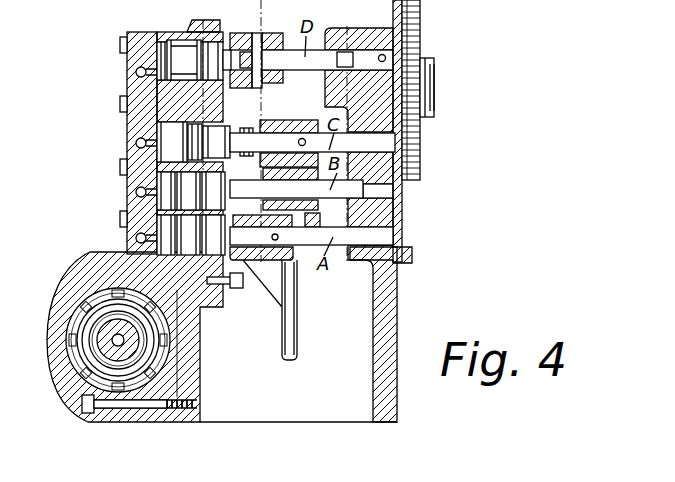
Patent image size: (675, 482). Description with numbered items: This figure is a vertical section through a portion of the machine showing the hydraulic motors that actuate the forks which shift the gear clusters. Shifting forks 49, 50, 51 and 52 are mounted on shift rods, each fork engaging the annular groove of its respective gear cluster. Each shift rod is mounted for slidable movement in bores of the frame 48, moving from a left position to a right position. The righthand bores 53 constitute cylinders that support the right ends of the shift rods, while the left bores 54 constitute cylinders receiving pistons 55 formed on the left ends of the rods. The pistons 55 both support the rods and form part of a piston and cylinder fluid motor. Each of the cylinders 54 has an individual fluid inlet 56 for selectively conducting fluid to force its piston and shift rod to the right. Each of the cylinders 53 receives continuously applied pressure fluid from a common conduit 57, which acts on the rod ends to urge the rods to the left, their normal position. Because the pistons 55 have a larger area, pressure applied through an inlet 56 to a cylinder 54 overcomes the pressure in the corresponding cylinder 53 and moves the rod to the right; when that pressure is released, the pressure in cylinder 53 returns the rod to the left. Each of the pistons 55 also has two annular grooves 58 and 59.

The frame 48 is at (309, 403).
The shifting fork 49 is at (297, 293).
The shifting fork 50 is at (320, 202).
The shifting fork 51 is at (288, 120).
The shifting fork 52 is at (273, 37).
The righthand bores 53 is at (372, 57).
The left bores 54 is at (172, 142).
The pistons 55 is at (232, 128).
The fluid inlet 56 is at (136, 72).
The common conduit 57 is at (400, 210).
The annular groove 58 is at (212, 27).
The annular groove 59 is at (170, 42).